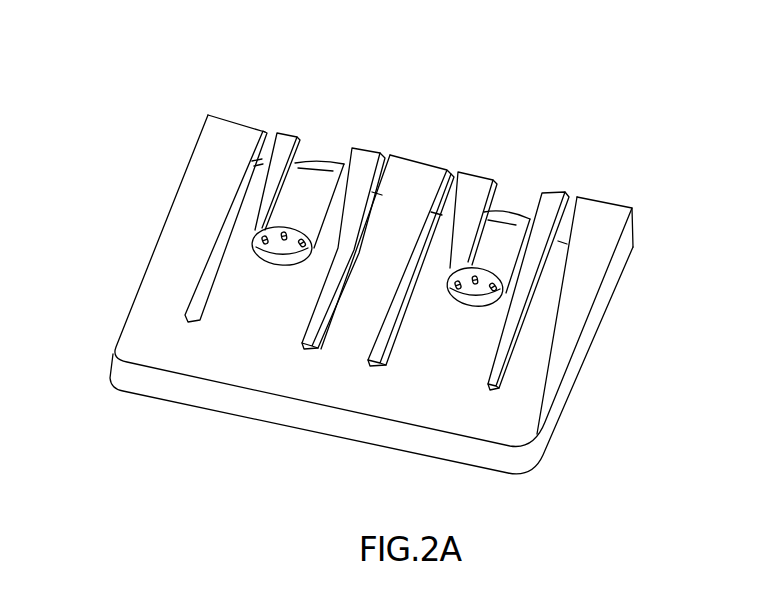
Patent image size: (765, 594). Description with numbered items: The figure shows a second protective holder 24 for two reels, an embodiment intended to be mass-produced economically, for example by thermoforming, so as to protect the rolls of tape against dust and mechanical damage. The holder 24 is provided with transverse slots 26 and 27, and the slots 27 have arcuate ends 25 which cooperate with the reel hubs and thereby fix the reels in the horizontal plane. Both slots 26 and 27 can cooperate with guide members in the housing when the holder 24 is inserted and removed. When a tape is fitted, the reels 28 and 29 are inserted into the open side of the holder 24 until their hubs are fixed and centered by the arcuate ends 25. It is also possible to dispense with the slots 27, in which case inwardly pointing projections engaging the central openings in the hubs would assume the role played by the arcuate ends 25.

The holder 24 is at (574, 400).
The arcuate ends 25 is at (256, 247).
The transverse slot 26 is at (577, 188).
The transverse slot 27 is at (313, 140).
The reel 28 is at (323, 165).
The reel 29 is at (507, 216).